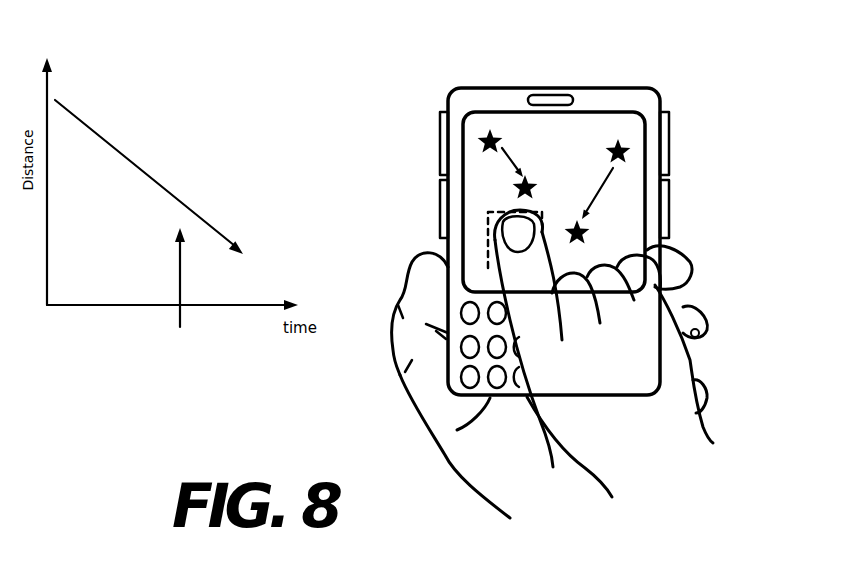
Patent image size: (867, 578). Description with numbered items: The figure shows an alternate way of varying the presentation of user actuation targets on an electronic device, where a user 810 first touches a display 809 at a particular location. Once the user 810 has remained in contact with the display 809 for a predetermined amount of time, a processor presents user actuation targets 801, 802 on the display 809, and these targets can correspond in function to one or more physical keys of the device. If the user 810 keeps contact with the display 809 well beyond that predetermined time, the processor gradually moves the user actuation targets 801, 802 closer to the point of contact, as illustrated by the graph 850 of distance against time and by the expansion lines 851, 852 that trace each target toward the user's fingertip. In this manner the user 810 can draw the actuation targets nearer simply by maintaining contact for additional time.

The user actuation target 801 is at (492, 130).
The user actuation target 802 is at (625, 140).
The display 809 is at (507, 112).
The user 810 is at (620, 352).
The graph 850 is at (179, 289).
The expansion line 851 is at (520, 163).
The expansion line 852 is at (597, 195).